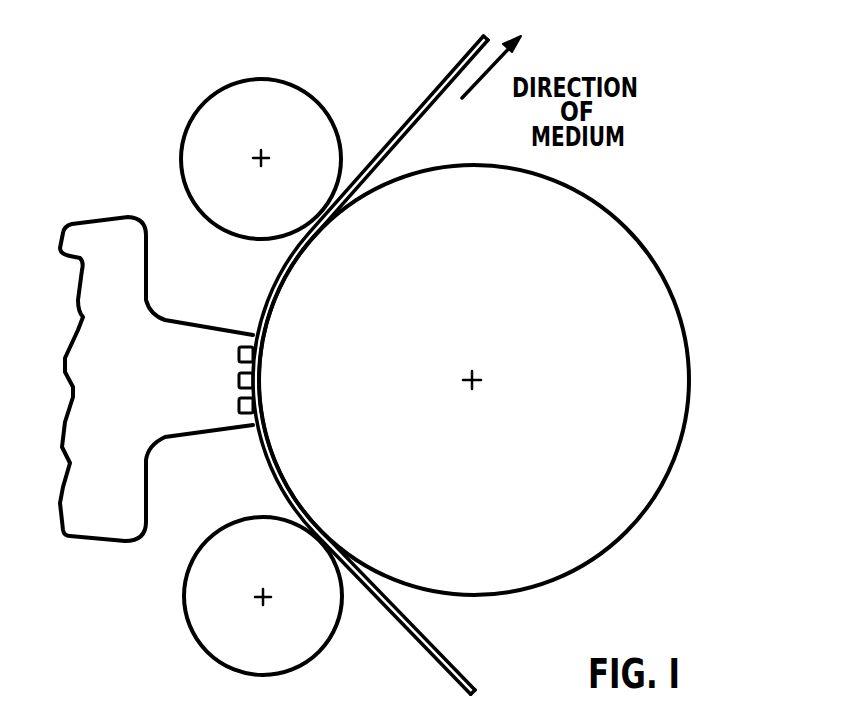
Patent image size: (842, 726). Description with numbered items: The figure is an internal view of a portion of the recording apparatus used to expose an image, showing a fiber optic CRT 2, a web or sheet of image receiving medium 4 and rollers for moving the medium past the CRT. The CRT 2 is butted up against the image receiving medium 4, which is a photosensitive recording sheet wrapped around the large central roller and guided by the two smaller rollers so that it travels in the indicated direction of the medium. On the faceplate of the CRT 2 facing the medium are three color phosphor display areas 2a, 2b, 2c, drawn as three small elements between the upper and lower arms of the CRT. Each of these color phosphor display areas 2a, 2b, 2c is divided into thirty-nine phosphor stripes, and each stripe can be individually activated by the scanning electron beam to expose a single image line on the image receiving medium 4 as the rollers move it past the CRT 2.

The CRT 2 is at (112, 216).
The color phosphor display area 2a is at (239, 354).
The color phosphor display area 2b is at (239, 380).
The color phosphor display area 2c is at (239, 401).
The image receiving medium 4 is at (453, 662).